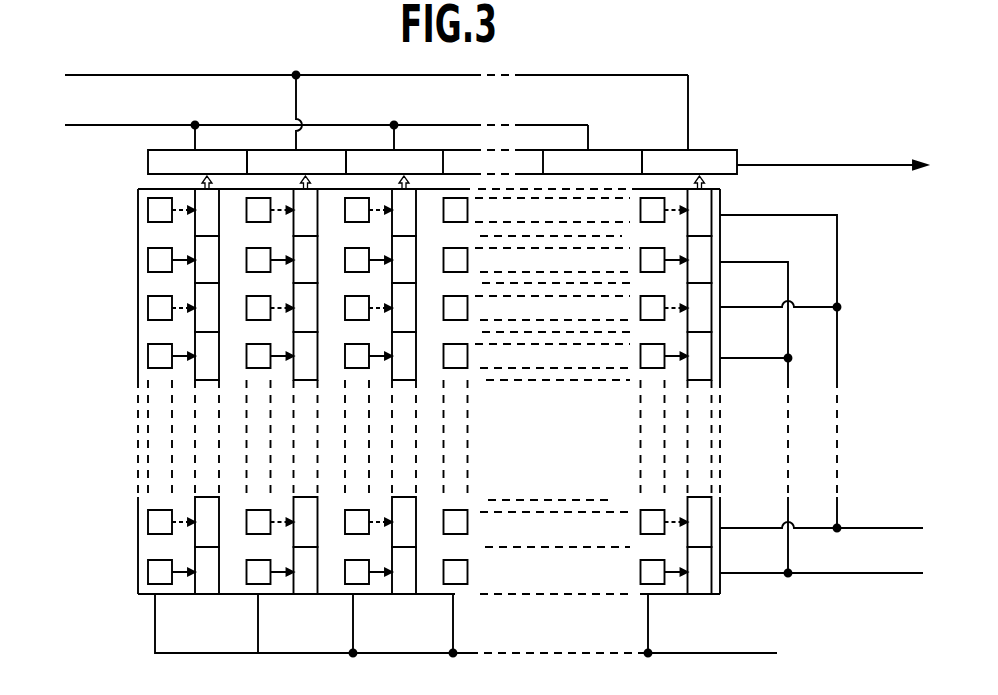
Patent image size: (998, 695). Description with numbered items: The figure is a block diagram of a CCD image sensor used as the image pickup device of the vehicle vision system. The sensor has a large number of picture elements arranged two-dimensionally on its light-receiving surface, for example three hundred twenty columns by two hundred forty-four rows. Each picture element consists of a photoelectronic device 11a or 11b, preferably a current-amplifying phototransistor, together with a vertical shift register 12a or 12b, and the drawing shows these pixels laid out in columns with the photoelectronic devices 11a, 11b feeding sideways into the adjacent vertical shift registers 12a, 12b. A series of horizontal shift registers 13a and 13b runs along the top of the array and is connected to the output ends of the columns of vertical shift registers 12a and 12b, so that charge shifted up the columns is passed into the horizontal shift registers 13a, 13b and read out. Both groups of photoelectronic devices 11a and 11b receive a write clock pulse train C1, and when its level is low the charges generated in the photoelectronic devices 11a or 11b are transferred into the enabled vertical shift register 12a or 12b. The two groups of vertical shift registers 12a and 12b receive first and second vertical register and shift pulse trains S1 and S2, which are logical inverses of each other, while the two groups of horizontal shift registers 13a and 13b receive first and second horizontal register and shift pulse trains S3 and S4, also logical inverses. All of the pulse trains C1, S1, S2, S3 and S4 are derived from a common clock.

The photoelectronic device 11a is at (152, 258).
The photoelectronic device 11b is at (152, 208).
The vertical shift register 12a is at (200, 268).
The vertical shift register 12b is at (200, 222).
The horizontal shift register 13a is at (148, 162).
The horizontal shift register 13b is at (267, 160).
The first vertical register and shift pulse train S1 is at (838, 423).
The second vertical register and shift pulse train S2 is at (838, 377).
The first horizontal register and shift pulse train S3 is at (313, 132).
The second horizontal register and shift pulse train S4 is at (363, 107).
The write clock pulse train C1 is at (482, 629).